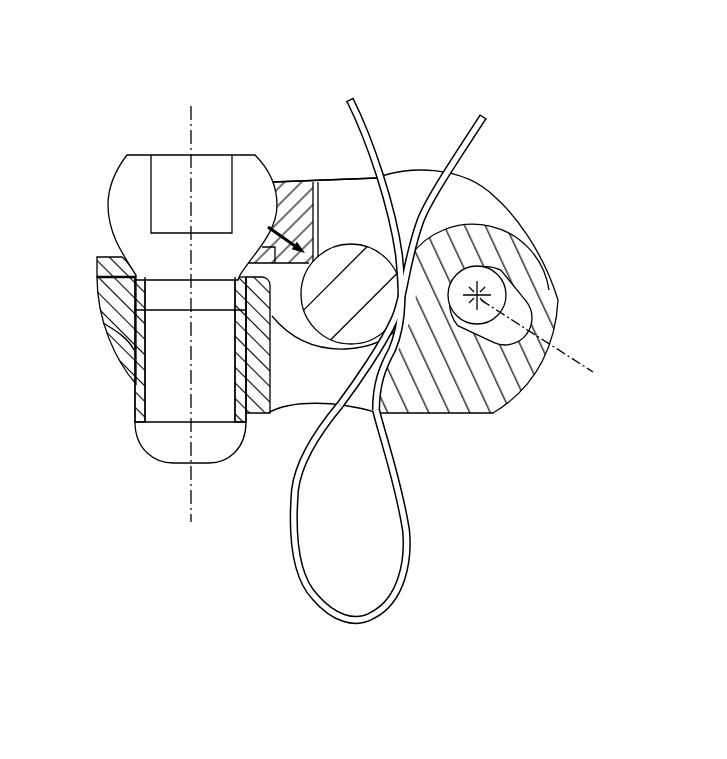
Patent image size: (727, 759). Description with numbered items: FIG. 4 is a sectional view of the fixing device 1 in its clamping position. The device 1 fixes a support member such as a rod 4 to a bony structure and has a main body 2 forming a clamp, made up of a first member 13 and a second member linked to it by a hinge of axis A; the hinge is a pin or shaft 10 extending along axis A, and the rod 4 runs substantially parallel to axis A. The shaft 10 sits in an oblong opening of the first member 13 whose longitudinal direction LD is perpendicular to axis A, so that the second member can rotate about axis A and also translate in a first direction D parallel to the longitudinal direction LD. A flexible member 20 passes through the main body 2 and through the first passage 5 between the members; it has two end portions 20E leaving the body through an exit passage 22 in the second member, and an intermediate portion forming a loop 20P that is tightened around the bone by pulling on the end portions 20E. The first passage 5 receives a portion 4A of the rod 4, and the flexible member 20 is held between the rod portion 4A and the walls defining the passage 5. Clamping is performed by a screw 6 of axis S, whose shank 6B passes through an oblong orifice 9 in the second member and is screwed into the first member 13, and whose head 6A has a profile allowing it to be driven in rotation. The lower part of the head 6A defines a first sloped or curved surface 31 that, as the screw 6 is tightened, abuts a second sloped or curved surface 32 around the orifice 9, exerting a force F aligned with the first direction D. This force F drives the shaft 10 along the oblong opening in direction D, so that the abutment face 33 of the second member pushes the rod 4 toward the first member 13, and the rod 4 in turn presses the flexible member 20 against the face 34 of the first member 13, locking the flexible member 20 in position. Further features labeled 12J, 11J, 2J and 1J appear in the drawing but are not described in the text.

The fixing device 1 is at (116, 100).
The screw axis S is at (190, 118).
The screw 6 is at (165, 303).
The screw head 6A is at (110, 199).
The screw shank 6B is at (160, 383).
The orifice 9 is at (127, 258).
The bushing flange 12J is at (100, 261).
The bushing 11J is at (108, 285).
The first member 13 is at (118, 347).
The first sloped or curved surface 31 is at (257, 214).
The second sloped or curved surface 32 is at (242, 263).
The abutment face 33 is at (330, 231).
The rod 4 is at (292, 320).
The rod portion 4A is at (328, 299).
The first passage 5 is at (294, 327).
The force F is at (286, 232).
The flexible member 20 is at (417, 598).
The end portions 20E is at (348, 96).
The loop 20P is at (296, 574).
The exit passage 22 is at (406, 181).
The cam surface 2J is at (492, 174).
The main body 2 is at (575, 313).
The shaft 10 is at (483, 292).
The axis A is at (500, 294).
The longitudinal direction LD is at (537, 361).
The first direction D is at (583, 364).
The face 34 is at (415, 345).
The bracket 1J is at (246, 325).